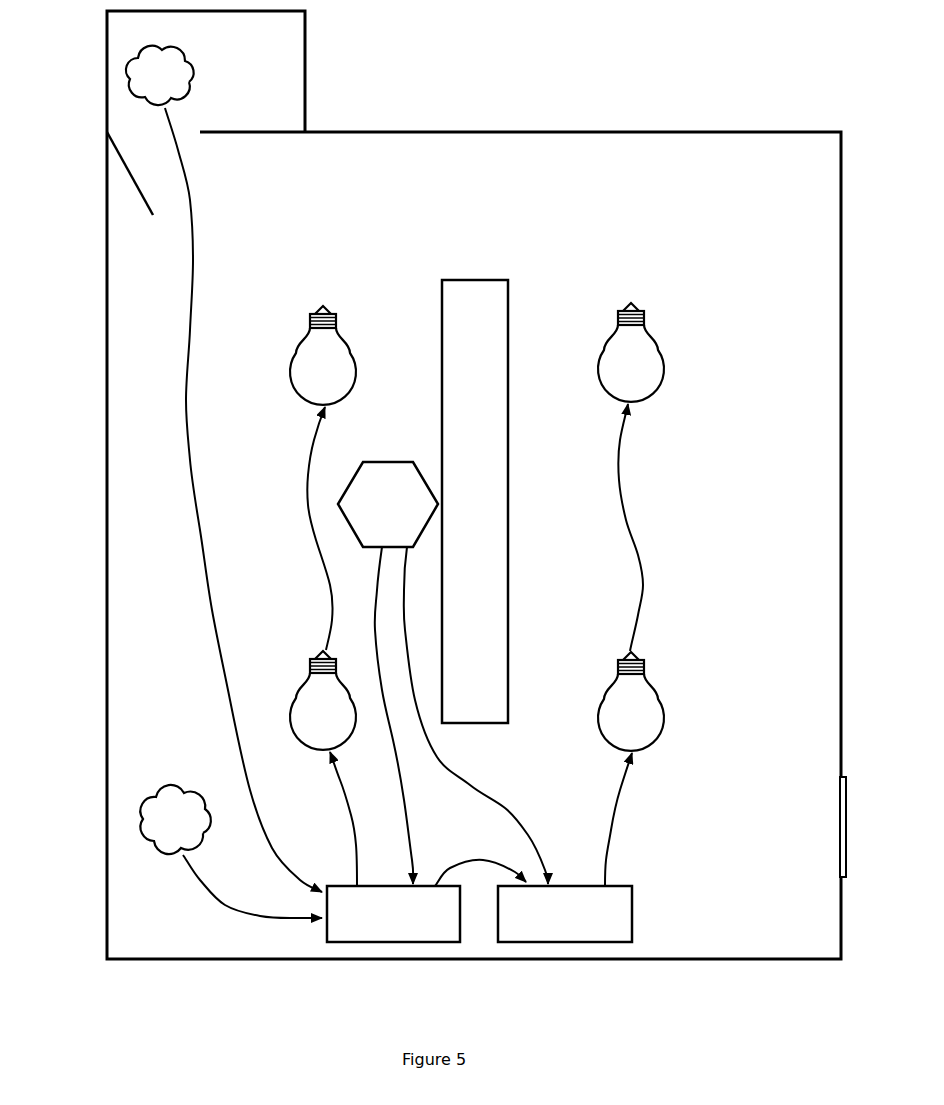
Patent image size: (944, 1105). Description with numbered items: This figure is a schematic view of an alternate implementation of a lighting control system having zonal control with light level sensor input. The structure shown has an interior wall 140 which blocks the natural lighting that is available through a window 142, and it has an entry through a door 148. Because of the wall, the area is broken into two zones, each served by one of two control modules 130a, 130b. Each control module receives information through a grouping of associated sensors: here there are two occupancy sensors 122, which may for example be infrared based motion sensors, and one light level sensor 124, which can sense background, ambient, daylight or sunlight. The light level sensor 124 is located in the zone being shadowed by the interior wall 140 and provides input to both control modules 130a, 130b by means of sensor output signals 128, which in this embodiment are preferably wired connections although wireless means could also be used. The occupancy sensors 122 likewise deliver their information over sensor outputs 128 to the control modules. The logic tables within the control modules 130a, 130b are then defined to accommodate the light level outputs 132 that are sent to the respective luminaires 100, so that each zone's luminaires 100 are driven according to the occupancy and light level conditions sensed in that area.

The luminaire 100 is at (335, 382).
The occupancy sensor 122 is at (163, 80).
The light level sensor 124 is at (390, 482).
The sensor output 128 is at (203, 565).
The control module 130a is at (419, 921).
The control module 130b is at (540, 921).
The light level output 132 is at (315, 533).
The interior wall 140 is at (485, 503).
The window 142 is at (838, 838).
The door 148 is at (128, 175).